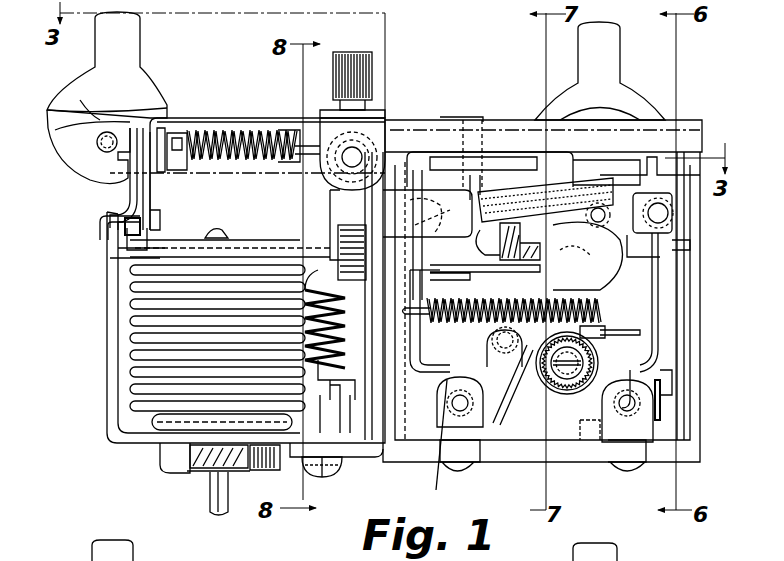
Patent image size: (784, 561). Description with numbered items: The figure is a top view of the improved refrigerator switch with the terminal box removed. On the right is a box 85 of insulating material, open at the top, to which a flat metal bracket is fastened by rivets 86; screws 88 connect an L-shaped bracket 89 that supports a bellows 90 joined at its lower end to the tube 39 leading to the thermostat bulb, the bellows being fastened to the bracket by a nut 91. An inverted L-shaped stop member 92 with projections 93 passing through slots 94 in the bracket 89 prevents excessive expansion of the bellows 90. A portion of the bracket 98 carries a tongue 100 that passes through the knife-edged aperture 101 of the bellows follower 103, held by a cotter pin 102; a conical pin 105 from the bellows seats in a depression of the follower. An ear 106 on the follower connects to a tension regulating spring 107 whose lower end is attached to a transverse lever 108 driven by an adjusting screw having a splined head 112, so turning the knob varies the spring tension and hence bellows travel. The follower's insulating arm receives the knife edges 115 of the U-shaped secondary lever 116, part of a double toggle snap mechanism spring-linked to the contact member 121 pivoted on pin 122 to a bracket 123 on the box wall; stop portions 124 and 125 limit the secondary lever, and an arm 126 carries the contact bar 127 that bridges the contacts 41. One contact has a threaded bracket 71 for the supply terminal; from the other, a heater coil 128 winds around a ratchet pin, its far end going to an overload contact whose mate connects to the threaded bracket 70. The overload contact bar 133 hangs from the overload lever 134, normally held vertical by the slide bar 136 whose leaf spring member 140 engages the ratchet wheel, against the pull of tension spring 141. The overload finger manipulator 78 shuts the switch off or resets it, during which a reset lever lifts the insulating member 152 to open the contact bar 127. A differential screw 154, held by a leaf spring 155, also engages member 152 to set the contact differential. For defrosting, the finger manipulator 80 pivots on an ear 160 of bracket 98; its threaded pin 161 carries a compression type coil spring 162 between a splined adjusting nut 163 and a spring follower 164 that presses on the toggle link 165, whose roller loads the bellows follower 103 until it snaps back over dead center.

The tube 39 is at (212, 506).
The contacts 41 is at (660, 392).
The threaded bracket 70 is at (487, 447).
The threaded bracket 71 is at (622, 425).
The overload finger manipulator 78 is at (608, 42).
The defrosting finger manipulator 80 is at (125, 42).
The box 85 is at (693, 282).
The rivets 86 is at (447, 117).
The screws 88 is at (130, 160).
The L-shaped bracket 89 is at (118, 380).
The bellows 90 is at (137, 333).
The nut 91 is at (175, 458).
The stop member 92 is at (133, 240).
The projections 93 is at (106, 235).
The slots 94 is at (112, 248).
The bracket 98 is at (266, 128).
The tongue 100 is at (128, 252).
The aperture 101 is at (142, 215).
The cotter pin 102 is at (130, 216).
The bellows follower 103 is at (212, 238).
The conical pin 105 is at (224, 233).
The ear 106 is at (328, 210).
The tension regulating spring 107 is at (360, 354).
The transverse lever 108 is at (345, 395).
The splined head 112 is at (355, 60).
The knife edges 115 is at (470, 213).
The U-shaped secondary lever 116 is at (503, 187).
The contact member 121 is at (640, 240).
The pin 122 is at (670, 213).
The bracket 123 is at (686, 243).
The stop portion 124 is at (621, 173).
The stop portion 125 is at (600, 245).
The arm 126 is at (660, 338).
The contact bar 127 is at (655, 375).
The heater coil 128 is at (573, 395).
The overload contact bar 133 is at (437, 443).
The overload lever 134 is at (432, 321).
The slide bar 136 is at (655, 330).
The leaf spring member 140 is at (514, 352).
The tension spring 141 is at (426, 338).
The insulating member 152 is at (515, 262).
The screw 154 is at (497, 167).
The leaf spring 155 is at (490, 180).
The ear 160 is at (93, 143).
The threaded pin 161 is at (166, 135).
The compression type coil spring 162 is at (182, 136).
The splined adjusting nut 163 is at (188, 133).
The spring follower 164 is at (286, 128).
The toggle link 165 is at (310, 148).